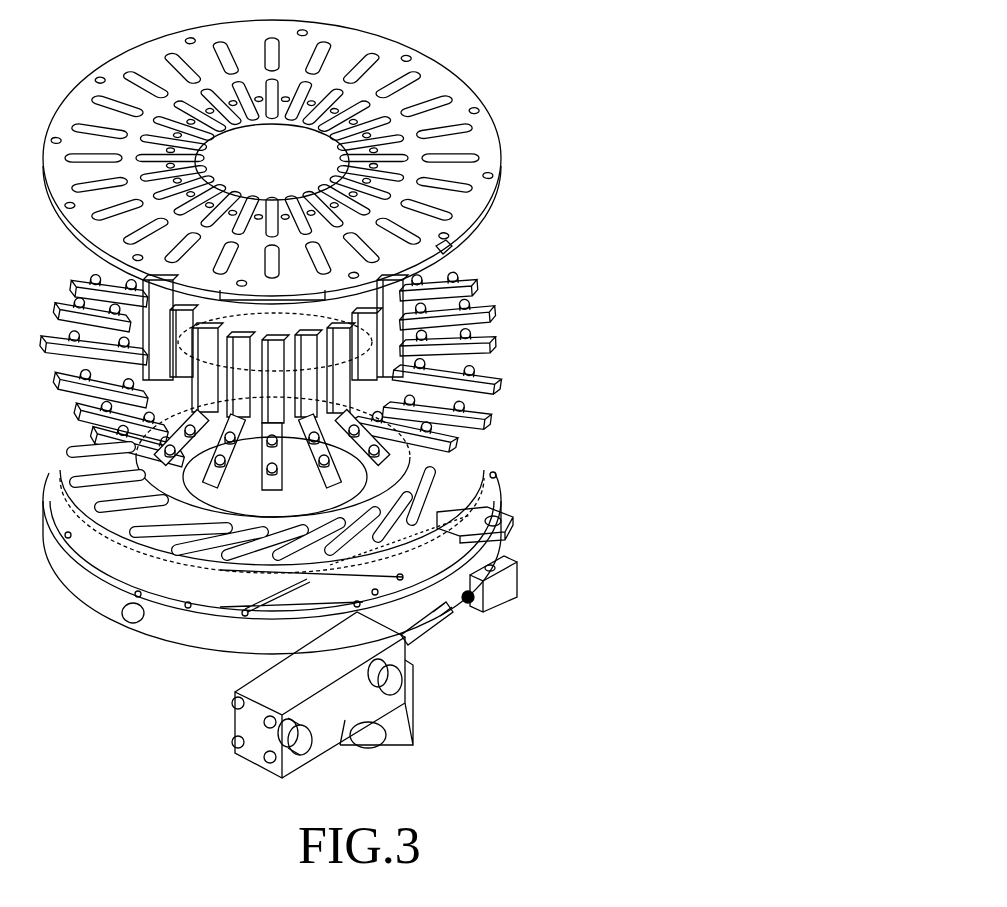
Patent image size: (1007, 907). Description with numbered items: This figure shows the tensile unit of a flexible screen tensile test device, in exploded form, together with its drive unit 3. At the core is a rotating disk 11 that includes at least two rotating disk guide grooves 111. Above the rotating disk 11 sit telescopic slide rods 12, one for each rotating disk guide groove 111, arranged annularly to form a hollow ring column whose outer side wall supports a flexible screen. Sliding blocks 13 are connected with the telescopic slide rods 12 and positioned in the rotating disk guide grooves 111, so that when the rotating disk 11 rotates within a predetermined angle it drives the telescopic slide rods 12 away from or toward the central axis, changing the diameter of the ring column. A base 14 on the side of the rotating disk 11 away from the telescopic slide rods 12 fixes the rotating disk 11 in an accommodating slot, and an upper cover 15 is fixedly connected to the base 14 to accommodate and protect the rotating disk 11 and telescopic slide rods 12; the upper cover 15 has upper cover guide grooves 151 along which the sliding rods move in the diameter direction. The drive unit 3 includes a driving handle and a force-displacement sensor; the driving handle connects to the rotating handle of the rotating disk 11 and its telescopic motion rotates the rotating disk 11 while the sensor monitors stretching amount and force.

The upper cover 15 is at (433, 77).
The upper cover guide groove 151 is at (443, 250).
The telescopic slide rod 12 is at (480, 373).
The sliding block 13 is at (468, 423).
The rotating disk guide groove 111 is at (470, 455).
The rotating disk 11 is at (463, 508).
The base 14 is at (433, 580).
The drive unit 3 is at (345, 663).